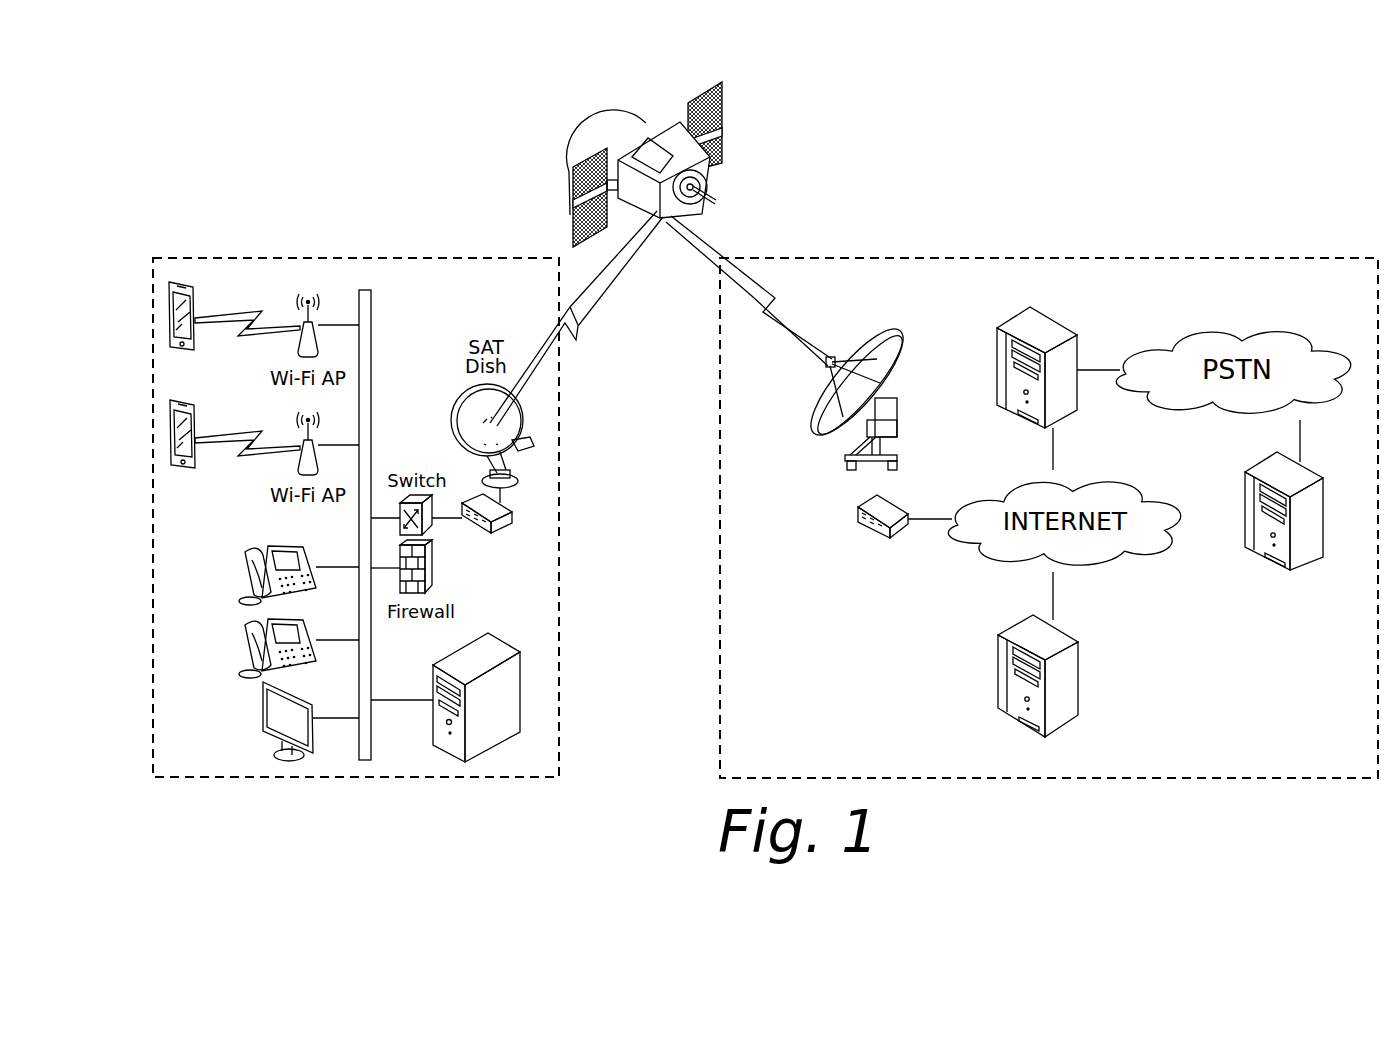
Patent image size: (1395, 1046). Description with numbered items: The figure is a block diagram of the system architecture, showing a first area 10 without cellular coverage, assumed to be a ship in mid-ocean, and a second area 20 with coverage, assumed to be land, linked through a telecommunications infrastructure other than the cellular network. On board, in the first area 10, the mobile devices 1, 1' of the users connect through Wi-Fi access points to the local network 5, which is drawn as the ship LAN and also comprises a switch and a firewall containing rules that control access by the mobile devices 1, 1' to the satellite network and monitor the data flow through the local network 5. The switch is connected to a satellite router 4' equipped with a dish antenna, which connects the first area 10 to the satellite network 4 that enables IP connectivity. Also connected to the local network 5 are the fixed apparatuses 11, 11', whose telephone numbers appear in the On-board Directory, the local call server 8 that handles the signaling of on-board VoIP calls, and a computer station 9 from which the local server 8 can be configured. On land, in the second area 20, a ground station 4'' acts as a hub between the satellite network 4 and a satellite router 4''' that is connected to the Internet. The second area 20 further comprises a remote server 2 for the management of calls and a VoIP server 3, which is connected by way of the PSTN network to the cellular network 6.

The mobile device 1 is at (234, 270).
The mobile device 1' is at (234, 468).
The remote server 2 is at (1008, 683).
The VoIP server 3 is at (1008, 365).
The satellite network 4 is at (614, 156).
The satellite router 4' is at (539, 538).
The ground station 4'' is at (831, 393).
The satellite router 4''' is at (862, 530).
The local network 5 is at (366, 307).
The cellular network 6 is at (1306, 545).
The local call server 8 is at (497, 697).
The computer station 9 is at (276, 716).
The first area 10 is at (456, 250).
The fixed apparatus 11 is at (262, 575).
The fixed apparatus 11' is at (263, 648).
The second area 20 is at (1117, 250).